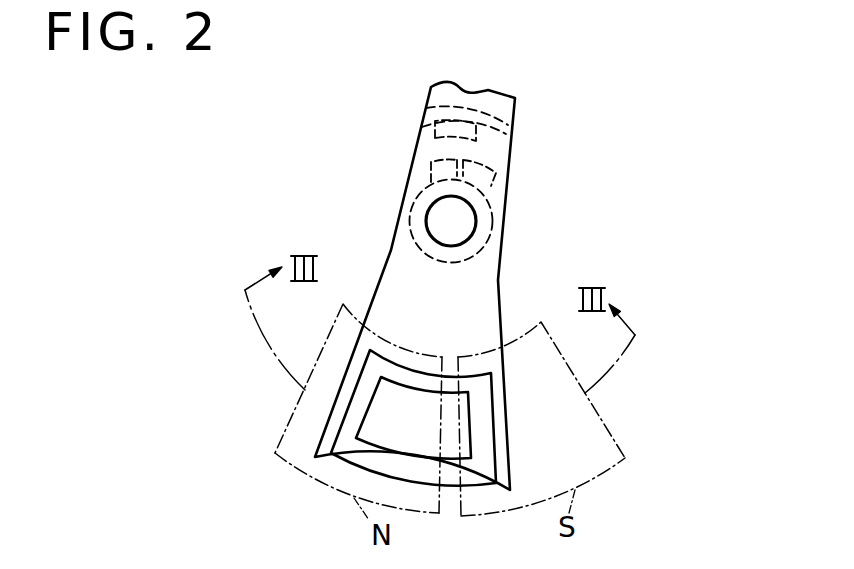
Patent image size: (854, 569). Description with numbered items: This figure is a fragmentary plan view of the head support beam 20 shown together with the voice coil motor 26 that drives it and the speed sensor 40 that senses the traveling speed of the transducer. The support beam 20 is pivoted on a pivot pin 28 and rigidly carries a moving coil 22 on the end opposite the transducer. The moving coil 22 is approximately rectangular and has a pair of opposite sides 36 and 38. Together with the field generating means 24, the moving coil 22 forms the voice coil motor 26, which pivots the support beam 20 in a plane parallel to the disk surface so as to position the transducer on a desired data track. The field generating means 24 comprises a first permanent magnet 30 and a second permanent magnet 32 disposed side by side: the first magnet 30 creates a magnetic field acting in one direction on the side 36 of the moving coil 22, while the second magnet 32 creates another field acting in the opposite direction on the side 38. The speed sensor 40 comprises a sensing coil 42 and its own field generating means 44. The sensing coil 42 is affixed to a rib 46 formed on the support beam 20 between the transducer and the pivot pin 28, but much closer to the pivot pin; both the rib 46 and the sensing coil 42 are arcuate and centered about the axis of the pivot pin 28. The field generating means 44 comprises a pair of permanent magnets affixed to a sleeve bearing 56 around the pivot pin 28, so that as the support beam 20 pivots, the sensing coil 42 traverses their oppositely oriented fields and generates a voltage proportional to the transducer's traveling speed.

The head support beam 20 is at (502, 250).
The moving coil 22 is at (450, 488).
The field generating means 24 is at (634, 418).
The voice coil motor 26 is at (266, 447).
The pivot pin 28 is at (475, 209).
The first permanent magnet 30 is at (283, 460).
The second permanent magnet 32 is at (612, 473).
The side of the moving coil 36 is at (347, 407).
The side of the moving coil 38 is at (488, 375).
The speed sensor 40 is at (520, 149).
The sensing coil 42 is at (424, 132).
The field generating means 44 is at (431, 172).
The rib 46 is at (436, 108).
The sleeve bearing 56 is at (452, 262).